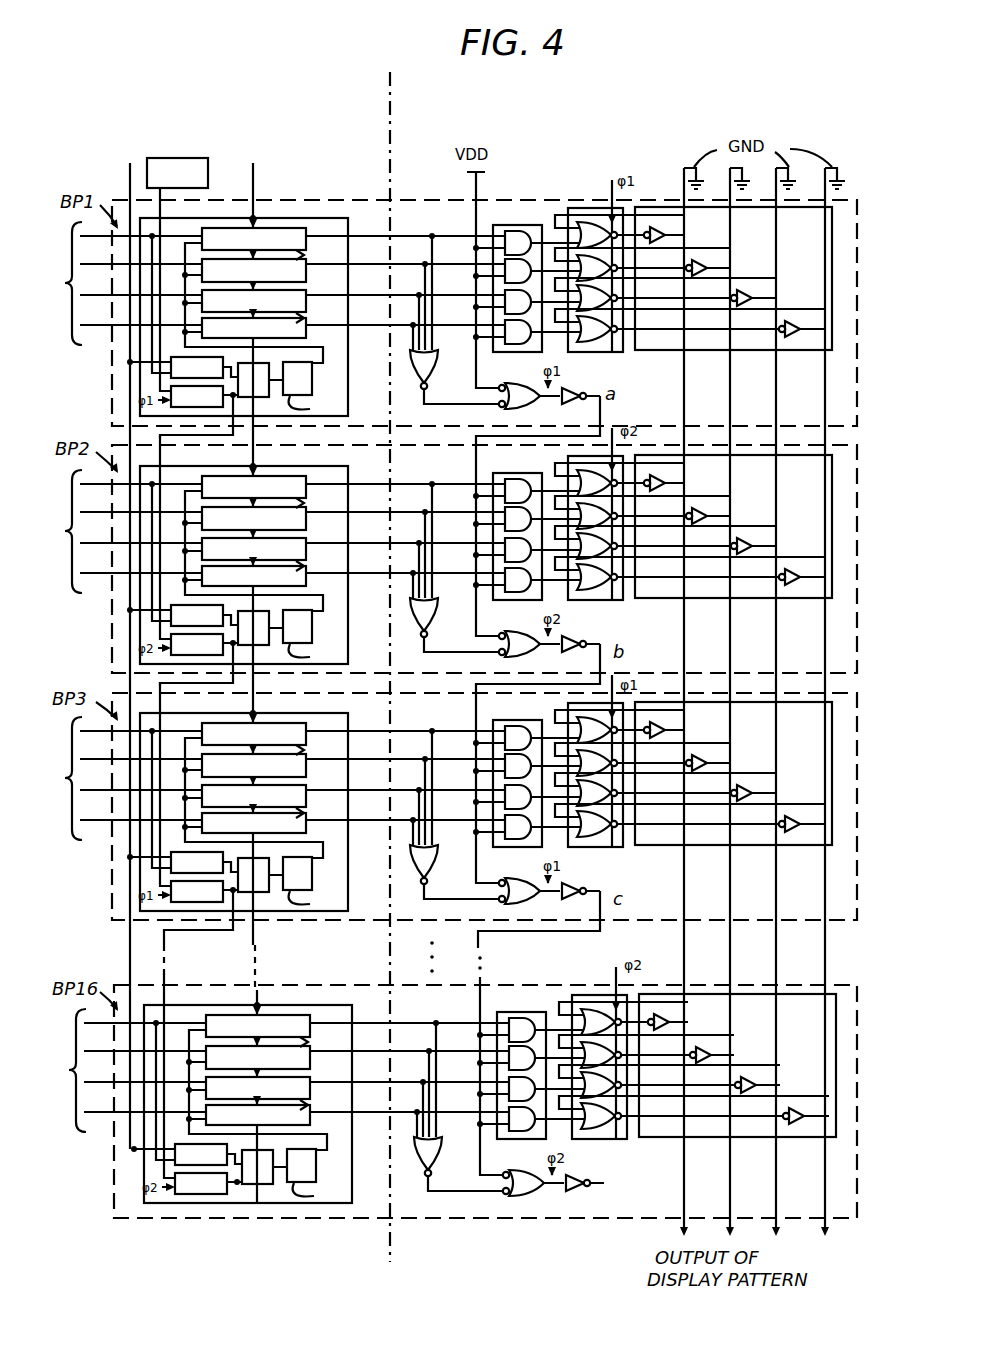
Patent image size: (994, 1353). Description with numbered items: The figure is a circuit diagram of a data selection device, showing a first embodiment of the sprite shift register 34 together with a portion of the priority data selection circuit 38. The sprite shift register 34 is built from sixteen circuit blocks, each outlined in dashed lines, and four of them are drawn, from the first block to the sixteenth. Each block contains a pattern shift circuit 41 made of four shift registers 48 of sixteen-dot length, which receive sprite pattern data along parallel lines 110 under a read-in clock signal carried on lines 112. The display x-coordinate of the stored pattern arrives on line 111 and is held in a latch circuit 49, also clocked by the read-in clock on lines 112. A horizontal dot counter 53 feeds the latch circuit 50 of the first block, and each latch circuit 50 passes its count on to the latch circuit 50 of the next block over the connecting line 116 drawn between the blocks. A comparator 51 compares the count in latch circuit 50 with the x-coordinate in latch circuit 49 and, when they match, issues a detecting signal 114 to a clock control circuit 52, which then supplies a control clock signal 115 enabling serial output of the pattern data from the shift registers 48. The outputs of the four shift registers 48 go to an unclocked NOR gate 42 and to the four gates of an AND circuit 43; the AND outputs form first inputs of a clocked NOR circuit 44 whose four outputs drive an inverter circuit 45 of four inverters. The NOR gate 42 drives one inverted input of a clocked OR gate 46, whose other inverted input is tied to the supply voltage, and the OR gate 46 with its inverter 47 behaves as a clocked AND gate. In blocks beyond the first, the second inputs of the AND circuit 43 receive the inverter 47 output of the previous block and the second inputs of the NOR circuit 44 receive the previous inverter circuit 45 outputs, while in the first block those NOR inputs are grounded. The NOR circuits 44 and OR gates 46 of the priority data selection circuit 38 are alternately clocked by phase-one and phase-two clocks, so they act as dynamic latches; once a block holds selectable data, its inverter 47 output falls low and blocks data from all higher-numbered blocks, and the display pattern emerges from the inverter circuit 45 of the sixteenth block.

The sprite shift register 34 is at (250, 110).
The priority data selection circuit 38 is at (589, 132).
The pattern shift circuit 41 is at (254, 695).
The NOR gate 42 is at (456, 712).
The AND circuit 43 is at (528, 671).
The clocked NOR circuit 44 is at (692, 677).
The inverter circuit 45 is at (726, 692).
The clocked OR gate 46 is at (520, 693).
The inverter 47 is at (585, 775).
The shift register 48 is at (270, 709).
The latch circuit 49 is at (199, 761).
The latch circuit 50 is at (199, 790).
The comparator 51 is at (255, 773).
The clock control circuit 52 is at (299, 772).
The horizontal dot counter 53 is at (177, 173).
The parallel lines 110 is at (256, 172).
The line 111 is at (130, 173).
The lines 112 is at (273, 677).
The detecting signal 114 is at (336, 796).
The control clock signal 115 is at (286, 704).
The carry line to next bit plane 116 is at (235, 402).